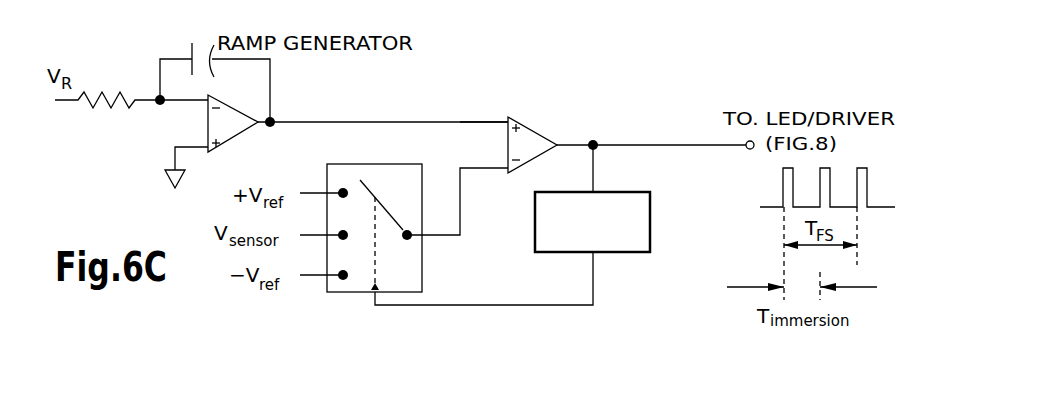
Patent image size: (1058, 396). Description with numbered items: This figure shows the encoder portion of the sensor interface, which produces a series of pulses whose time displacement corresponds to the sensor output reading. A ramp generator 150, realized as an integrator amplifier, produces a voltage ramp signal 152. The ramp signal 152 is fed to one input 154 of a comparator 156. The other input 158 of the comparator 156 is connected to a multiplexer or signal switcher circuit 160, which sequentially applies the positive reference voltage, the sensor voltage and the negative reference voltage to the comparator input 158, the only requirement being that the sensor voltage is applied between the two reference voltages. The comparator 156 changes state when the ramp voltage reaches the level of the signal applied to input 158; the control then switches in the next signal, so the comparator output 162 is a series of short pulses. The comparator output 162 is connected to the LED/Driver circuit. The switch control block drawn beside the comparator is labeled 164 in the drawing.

The ramp generator 150 is at (229, 140).
The voltage ramp signal 152 is at (274, 119).
The comparator input 154 is at (494, 113).
The comparator 156 is at (540, 131).
The comparator input 158 is at (498, 182).
The signal switcher circuit 160 is at (383, 163).
The comparator output 162 is at (593, 142).
The switch control 164 is at (650, 232).